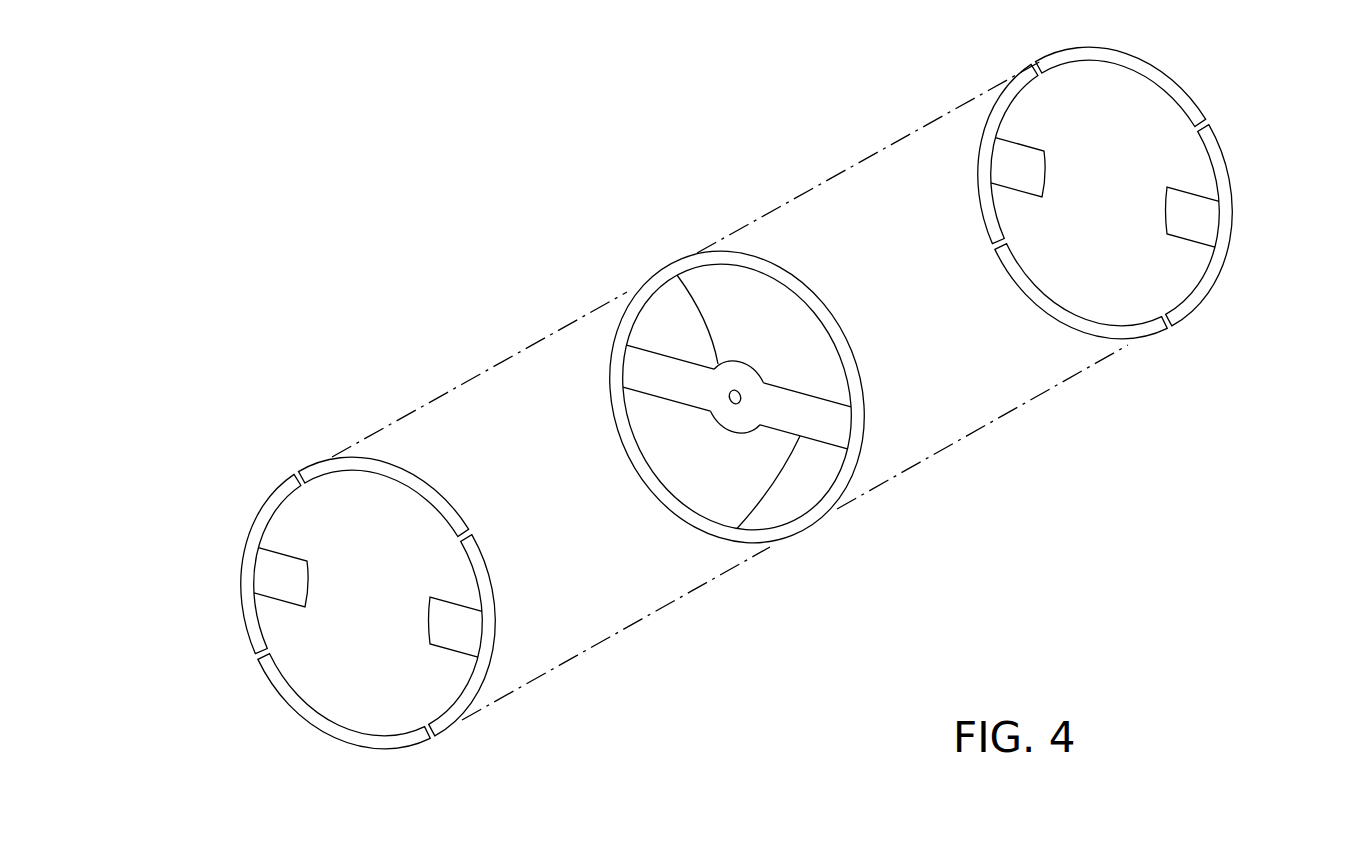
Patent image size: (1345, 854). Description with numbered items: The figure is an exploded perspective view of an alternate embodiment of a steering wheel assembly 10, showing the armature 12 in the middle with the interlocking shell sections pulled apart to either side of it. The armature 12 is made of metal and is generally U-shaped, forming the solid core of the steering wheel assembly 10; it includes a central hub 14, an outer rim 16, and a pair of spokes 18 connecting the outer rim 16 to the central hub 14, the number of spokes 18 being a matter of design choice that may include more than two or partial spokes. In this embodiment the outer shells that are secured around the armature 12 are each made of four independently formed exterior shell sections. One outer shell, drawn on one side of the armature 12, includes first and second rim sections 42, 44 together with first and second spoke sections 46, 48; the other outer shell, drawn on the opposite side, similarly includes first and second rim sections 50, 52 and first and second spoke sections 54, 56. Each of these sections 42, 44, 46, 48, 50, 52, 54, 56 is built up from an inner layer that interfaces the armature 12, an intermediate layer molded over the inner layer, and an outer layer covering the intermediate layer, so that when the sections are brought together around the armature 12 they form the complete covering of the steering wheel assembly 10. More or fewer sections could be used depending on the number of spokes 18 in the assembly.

The steering wheel assembly 10 is at (535, 205).
The armature 12 is at (818, 525).
The central hub 14 is at (677, 275).
The outer rim 16 is at (840, 325).
The spokes 18 is at (655, 398).
The first rim section 42 is at (447, 503).
The second rim section 44 is at (293, 703).
The first spoke section 46 is at (248, 528).
The second spoke section 48 is at (490, 590).
The first rim section 50 is at (1183, 95).
The second rim section 52 is at (1050, 315).
The first spoke section 54 is at (1230, 187).
The second spoke section 56 is at (977, 187).